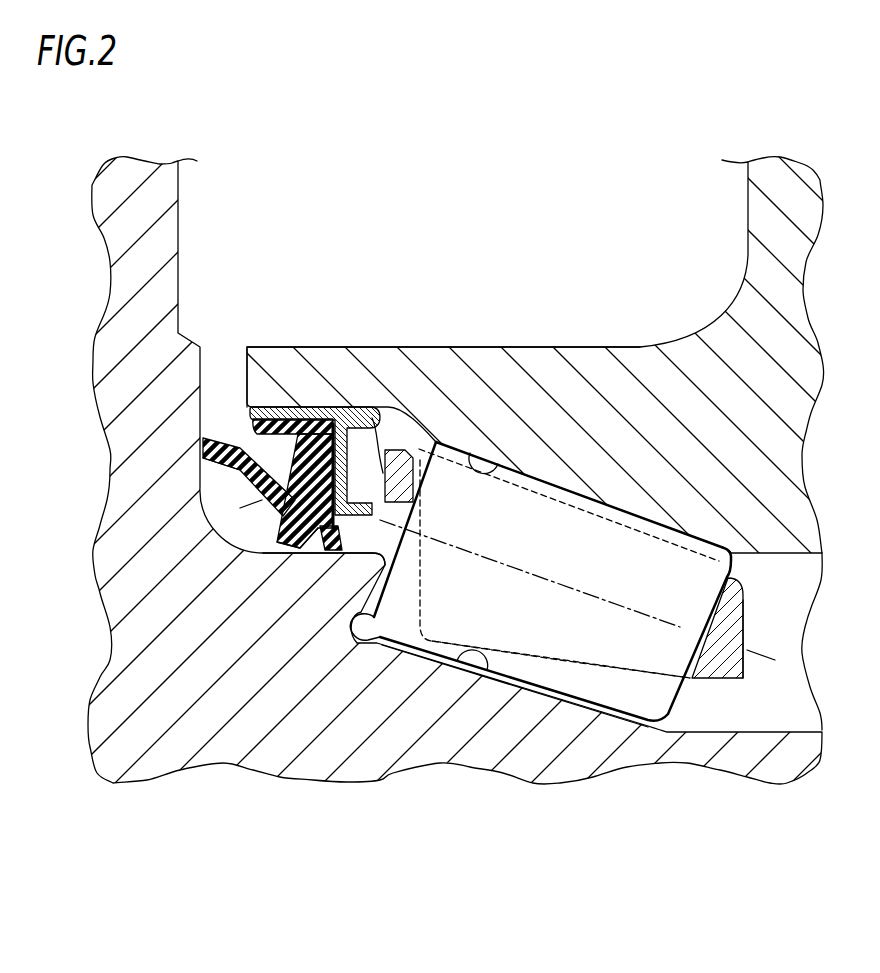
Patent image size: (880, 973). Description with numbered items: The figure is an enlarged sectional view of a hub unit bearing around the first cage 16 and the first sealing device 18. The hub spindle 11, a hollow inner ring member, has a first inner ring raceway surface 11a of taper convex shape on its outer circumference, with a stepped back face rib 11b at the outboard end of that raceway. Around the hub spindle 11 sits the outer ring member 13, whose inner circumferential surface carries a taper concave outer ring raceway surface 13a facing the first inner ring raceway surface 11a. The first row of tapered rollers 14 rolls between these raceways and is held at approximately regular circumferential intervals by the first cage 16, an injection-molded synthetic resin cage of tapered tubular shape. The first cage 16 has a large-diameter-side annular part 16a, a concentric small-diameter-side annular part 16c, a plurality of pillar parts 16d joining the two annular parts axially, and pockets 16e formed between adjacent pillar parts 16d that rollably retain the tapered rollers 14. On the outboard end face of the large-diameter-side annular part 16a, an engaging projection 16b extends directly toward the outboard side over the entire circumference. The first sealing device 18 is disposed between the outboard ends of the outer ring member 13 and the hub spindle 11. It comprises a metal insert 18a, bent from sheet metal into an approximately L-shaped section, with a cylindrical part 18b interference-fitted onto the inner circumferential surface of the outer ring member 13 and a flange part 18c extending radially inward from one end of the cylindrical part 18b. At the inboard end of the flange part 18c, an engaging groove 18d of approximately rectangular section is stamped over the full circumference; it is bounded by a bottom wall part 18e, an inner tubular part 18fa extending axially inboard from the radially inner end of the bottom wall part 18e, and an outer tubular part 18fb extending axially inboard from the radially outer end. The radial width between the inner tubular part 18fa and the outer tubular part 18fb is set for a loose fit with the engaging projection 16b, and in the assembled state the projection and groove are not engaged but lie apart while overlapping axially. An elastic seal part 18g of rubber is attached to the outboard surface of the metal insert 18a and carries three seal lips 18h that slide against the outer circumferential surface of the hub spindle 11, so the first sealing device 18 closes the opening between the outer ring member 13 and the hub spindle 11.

The hub spindle 11 is at (146, 337).
The first inner ring raceway surface 11a is at (440, 650).
The stepped back face rib 11b is at (383, 562).
The outer ring member 13 is at (773, 184).
The outer ring raceway surface 13a is at (470, 463).
The first row of tapered rollers 14 is at (565, 552).
The first cage 16 is at (713, 678).
The large-diameter-side annular part 16a is at (397, 450).
The engaging projection 16b is at (375, 452).
The small-diameter-side annular part 16c is at (748, 668).
The pillar part 16d is at (590, 668).
The pocket 16e is at (535, 635).
The first sealing device 18 is at (200, 555).
The metal insert 18a is at (312, 412).
The cylindrical part 18b is at (293, 440).
The flange part 18c is at (235, 447).
The engaging groove 18d is at (356, 540).
The bottom wall part 18e is at (240, 478).
The inner tubular part 18fa is at (347, 560).
The outer tubular part 18fb is at (348, 465).
The elastic seal part 18g is at (245, 508).
The seal lip 18h is at (285, 550).